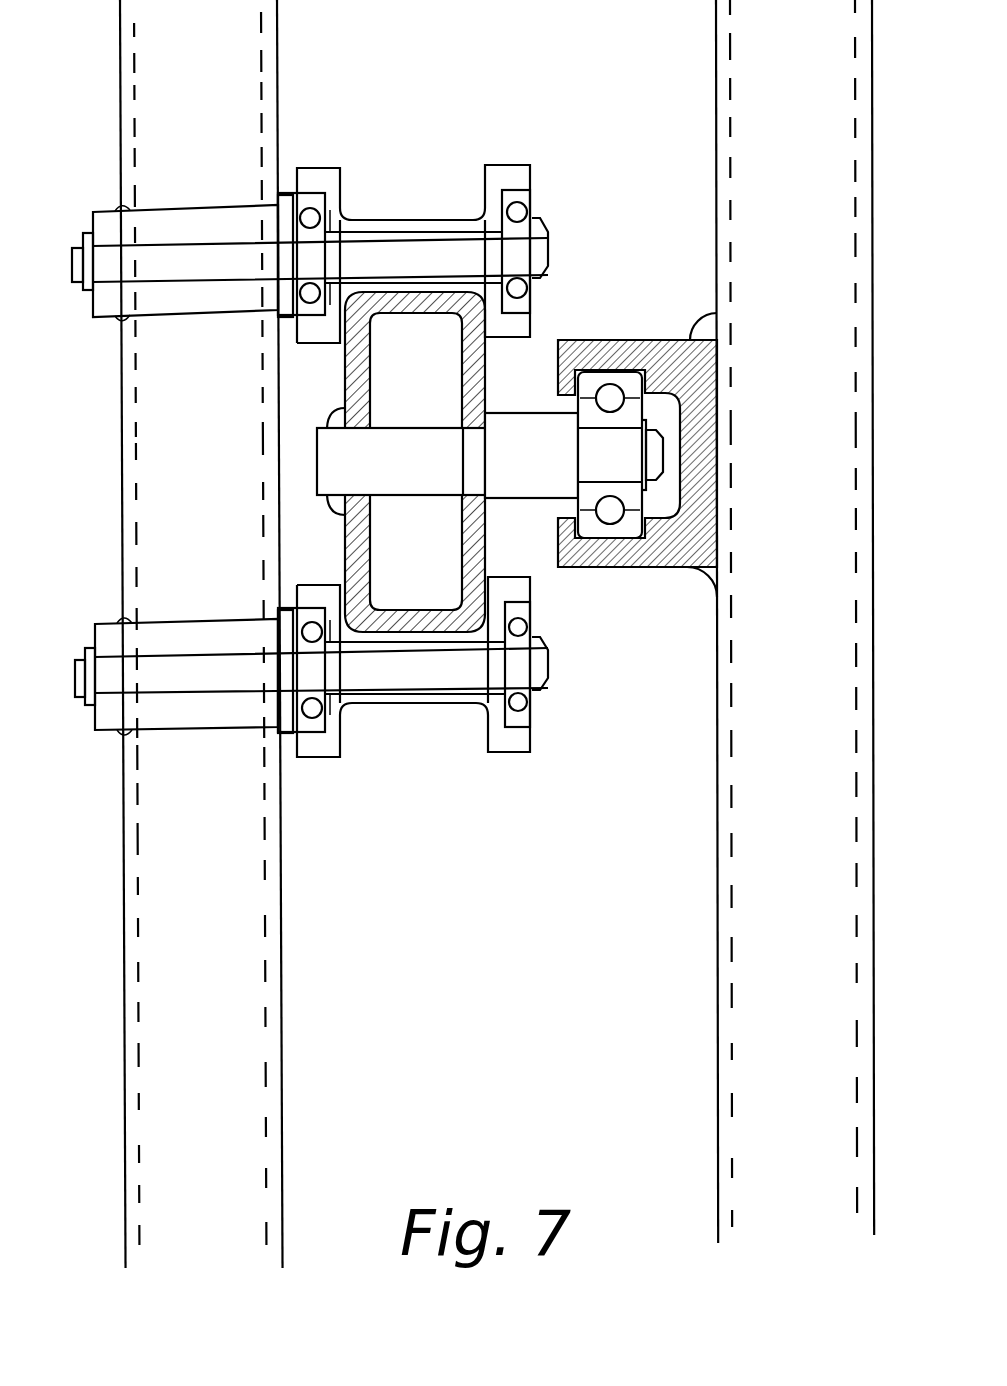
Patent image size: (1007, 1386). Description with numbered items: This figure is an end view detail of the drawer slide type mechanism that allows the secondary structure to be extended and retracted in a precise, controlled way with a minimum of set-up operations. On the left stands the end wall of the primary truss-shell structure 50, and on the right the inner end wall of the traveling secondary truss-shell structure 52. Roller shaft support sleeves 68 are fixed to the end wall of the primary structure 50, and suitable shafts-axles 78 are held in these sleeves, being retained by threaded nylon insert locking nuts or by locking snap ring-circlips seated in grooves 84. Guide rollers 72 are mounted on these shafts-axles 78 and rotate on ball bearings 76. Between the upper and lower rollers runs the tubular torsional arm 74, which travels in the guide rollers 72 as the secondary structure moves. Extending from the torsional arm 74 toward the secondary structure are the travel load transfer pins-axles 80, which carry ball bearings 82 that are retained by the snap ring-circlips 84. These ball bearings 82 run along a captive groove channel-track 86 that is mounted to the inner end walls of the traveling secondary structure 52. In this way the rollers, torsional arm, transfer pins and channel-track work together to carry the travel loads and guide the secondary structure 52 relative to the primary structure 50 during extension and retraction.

The primary truss-shell structure 50 is at (312, 1003).
The secondary truss-shell structure 52 is at (698, 860).
The roller shaft support sleeves 68 is at (212, 293).
The guide rollers 72 is at (518, 175).
The tubular torsional arm 74 is at (465, 512).
The ball bearings 76 is at (523, 612).
The shafts-axles 78 is at (542, 247).
The travel load transfer pins-axles 80 is at (545, 472).
The ball bearings 82 is at (580, 410).
The snap ring-circlips in grooves 84 is at (87, 287).
The captive groove channel-track 86 is at (680, 547).